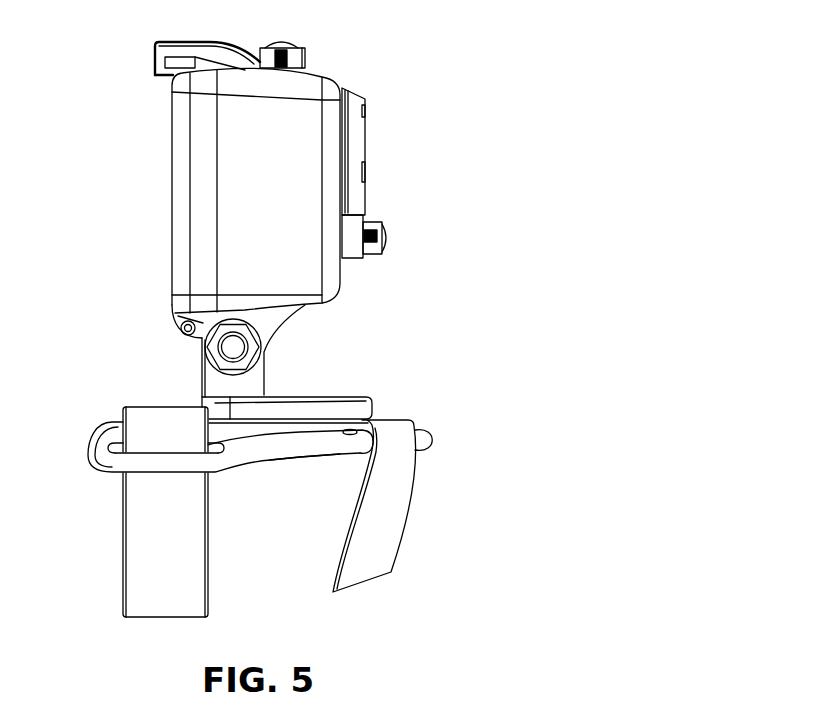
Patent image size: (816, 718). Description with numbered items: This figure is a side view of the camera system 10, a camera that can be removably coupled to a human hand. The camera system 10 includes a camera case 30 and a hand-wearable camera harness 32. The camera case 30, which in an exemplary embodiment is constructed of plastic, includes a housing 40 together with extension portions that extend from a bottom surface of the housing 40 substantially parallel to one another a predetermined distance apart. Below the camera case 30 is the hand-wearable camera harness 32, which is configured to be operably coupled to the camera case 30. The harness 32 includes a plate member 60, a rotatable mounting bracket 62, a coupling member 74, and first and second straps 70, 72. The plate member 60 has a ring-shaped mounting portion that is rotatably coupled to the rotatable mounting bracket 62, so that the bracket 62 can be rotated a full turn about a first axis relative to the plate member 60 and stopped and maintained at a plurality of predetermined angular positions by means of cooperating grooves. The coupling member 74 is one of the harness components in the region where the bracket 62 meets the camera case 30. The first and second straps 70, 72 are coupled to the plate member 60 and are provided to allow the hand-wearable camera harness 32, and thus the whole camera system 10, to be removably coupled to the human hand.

The camera system 10 is at (438, 135).
The camera case 30 is at (339, 70).
The housing 40 is at (364, 190).
The coupling member 74 is at (238, 346).
The rotatable mounting bracket 62 is at (316, 407).
The plate member 60 is at (218, 468).
The hand-wearable camera harness 32 is at (304, 463).
The first strap 70 is at (378, 527).
The second strap 72 is at (150, 572).